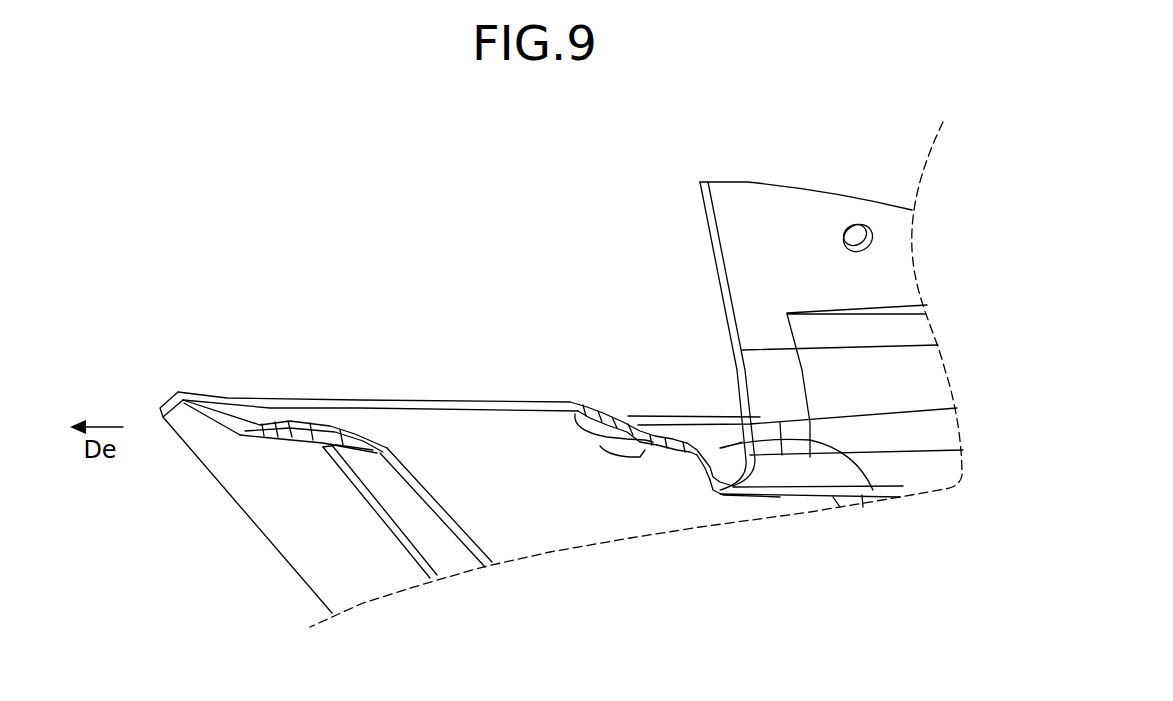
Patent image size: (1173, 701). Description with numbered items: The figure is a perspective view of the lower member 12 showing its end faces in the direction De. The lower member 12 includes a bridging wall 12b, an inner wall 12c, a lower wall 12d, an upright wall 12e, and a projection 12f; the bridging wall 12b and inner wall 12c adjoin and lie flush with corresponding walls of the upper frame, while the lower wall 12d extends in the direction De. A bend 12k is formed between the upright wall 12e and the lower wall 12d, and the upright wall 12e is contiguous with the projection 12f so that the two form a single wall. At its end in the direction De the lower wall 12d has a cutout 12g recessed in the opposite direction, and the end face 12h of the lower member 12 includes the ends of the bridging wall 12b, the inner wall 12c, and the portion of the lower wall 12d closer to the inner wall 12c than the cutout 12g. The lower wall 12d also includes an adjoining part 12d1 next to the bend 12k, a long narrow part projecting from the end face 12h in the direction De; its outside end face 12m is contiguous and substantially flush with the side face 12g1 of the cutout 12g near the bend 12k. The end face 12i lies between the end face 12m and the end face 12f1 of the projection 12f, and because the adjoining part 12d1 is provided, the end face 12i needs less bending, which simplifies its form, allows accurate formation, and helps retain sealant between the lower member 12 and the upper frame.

The lower member 12 is at (807, 160).
The bridging wall 12b is at (898, 268).
The inner wall 12c is at (788, 473).
The lower wall 12d is at (873, 490).
The adjoining part 12d1 is at (655, 428).
The upright wall 12e is at (745, 508).
The projection 12f is at (397, 430).
The end face of the projection 12f1 is at (410, 405).
The cutout 12g is at (692, 470).
The side face of the cutout 12g1 is at (672, 447).
The end face 12h is at (710, 487).
The end face 12i is at (610, 450).
The bend 12k is at (712, 421).
The outside end face of the adjoining part 12m is at (650, 450).